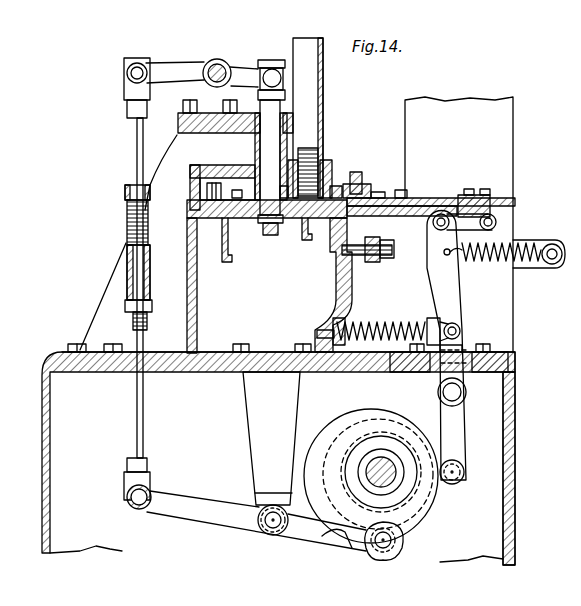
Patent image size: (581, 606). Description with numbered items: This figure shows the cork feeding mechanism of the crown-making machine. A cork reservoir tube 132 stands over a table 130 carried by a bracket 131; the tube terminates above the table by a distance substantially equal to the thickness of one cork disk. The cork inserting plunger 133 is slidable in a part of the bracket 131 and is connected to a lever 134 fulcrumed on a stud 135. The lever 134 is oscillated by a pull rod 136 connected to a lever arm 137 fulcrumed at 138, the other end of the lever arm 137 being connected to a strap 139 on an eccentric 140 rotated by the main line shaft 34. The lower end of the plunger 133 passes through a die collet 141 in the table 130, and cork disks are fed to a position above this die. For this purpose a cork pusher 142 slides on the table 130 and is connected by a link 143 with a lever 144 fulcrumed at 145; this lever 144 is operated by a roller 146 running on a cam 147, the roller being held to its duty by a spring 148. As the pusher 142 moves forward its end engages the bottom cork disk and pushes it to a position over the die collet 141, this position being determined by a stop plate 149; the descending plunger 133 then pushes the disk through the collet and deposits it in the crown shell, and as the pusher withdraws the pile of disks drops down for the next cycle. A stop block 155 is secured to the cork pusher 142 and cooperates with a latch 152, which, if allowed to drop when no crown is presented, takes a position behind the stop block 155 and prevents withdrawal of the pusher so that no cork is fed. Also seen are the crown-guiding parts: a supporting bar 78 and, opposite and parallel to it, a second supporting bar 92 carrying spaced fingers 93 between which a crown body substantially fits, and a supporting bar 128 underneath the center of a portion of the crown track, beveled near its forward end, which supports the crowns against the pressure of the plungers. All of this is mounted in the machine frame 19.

The housing 19 is at (512, 432).
The main line shaft 34 is at (386, 458).
The supporting bar 78 is at (228, 262).
The second supporting bar 92 is at (309, 234).
The spaced fingers 93 is at (298, 236).
The supporting bar 128 is at (272, 238).
The table 130 is at (383, 224).
The bracket 131 is at (196, 184).
The cork reservoir tube 132 is at (325, 106).
The cork inserting plunger 133 is at (270, 154).
The lever 134 is at (250, 66).
The stud 135 is at (221, 57).
The pull rod 136 is at (132, 157).
The lever arm 137 is at (227, 531).
The fulcrum 138 is at (273, 529).
The strap 139 is at (392, 556).
The eccentric 140 is at (415, 506).
The die collet 141 is at (243, 212).
The cork pusher 142 is at (456, 203).
The link 143 is at (496, 230).
The lever 144 is at (463, 308).
The fulcrum 145 is at (466, 392).
The roller 146 is at (463, 469).
The cam 147 is at (438, 497).
The spring 148 is at (537, 268).
The stop plate 149 is at (262, 232).
The latch 152 is at (350, 176).
The stop block 155 is at (376, 196).